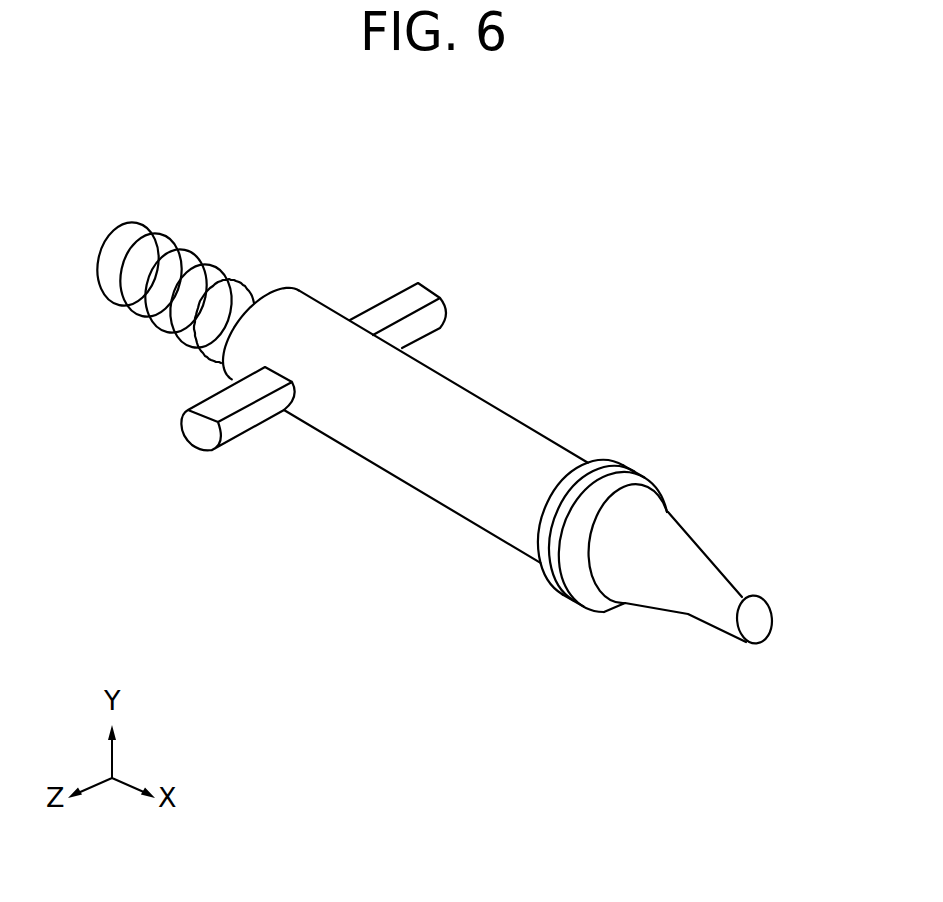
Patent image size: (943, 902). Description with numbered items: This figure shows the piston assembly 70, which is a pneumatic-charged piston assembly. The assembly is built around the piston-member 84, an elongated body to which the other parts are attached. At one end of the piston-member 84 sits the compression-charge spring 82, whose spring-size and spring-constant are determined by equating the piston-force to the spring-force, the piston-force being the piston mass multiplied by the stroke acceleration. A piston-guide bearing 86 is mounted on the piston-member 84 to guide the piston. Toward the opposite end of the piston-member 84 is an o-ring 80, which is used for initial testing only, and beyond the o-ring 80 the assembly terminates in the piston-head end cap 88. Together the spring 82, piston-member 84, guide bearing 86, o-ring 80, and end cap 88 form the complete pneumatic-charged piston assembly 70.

The piston assembly 70 is at (500, 355).
The o-ring 80 is at (553, 574).
The compression-charge spring 82 is at (136, 222).
The piston-member 84 is at (425, 496).
The piston-guide bearing 86 is at (197, 453).
The piston-head end cap 88 is at (761, 628).